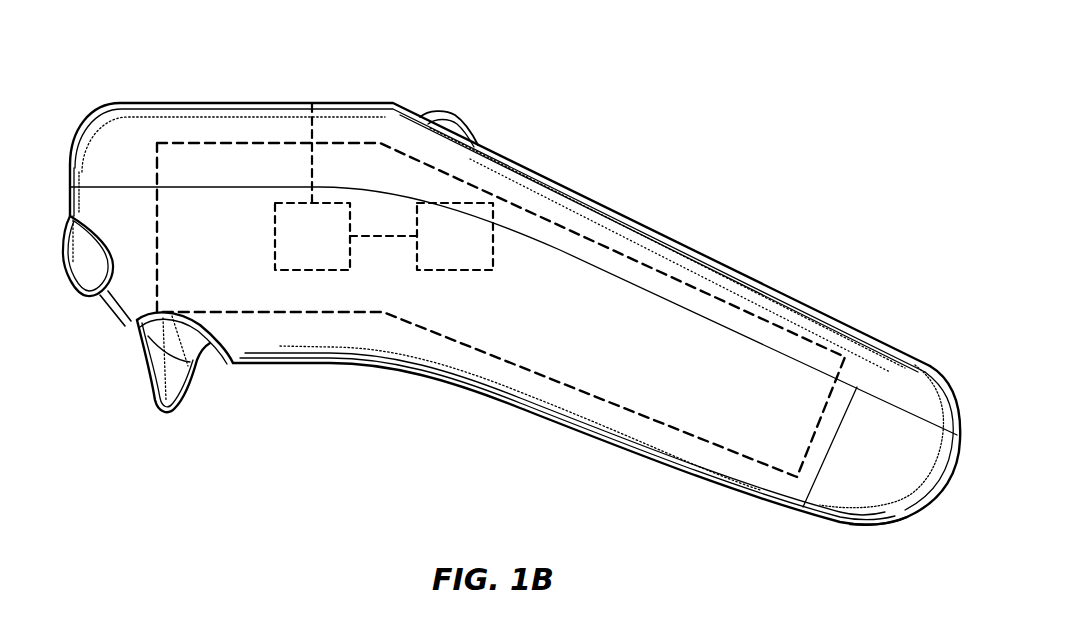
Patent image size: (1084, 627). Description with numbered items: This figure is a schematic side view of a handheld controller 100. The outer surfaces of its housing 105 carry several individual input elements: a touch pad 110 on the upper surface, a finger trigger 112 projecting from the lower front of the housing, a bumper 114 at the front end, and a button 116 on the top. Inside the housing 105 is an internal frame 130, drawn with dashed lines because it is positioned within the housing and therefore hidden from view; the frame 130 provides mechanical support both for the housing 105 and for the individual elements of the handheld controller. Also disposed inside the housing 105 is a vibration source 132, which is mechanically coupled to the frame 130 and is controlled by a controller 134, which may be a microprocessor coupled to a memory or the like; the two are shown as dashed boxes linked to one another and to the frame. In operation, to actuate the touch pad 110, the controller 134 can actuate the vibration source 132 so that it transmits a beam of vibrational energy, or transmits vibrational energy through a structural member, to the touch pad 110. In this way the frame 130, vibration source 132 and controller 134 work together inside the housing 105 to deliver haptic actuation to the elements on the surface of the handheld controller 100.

The handheld controller 100 is at (643, 108).
The housing 105 is at (893, 458).
The touch pad 110 is at (248, 103).
The finger trigger 112 is at (177, 402).
The bumper 114 is at (82, 282).
The button 116 is at (457, 124).
The internal frame 130 is at (662, 273).
The vibration source 132 is at (302, 271).
The controller 134 is at (455, 272).